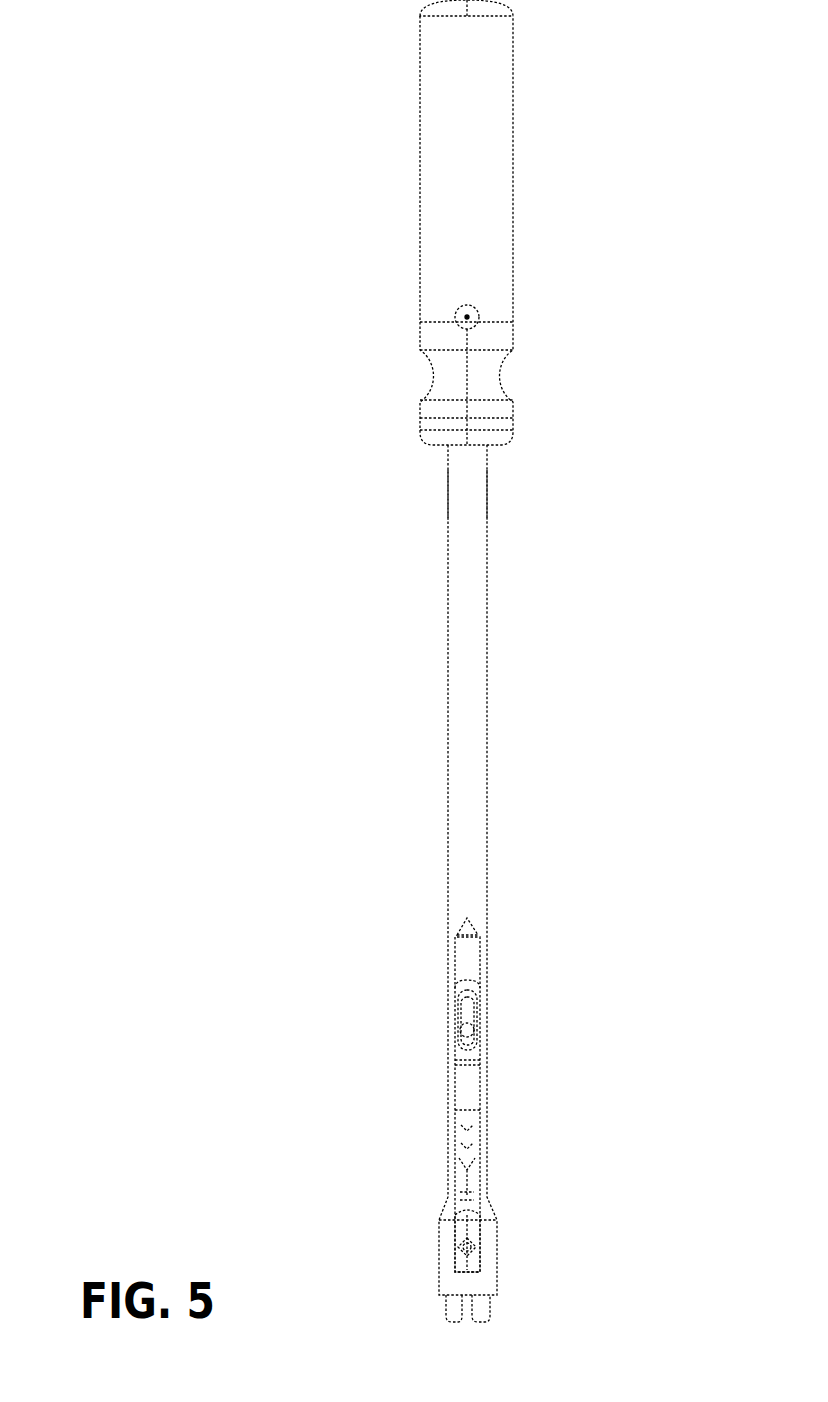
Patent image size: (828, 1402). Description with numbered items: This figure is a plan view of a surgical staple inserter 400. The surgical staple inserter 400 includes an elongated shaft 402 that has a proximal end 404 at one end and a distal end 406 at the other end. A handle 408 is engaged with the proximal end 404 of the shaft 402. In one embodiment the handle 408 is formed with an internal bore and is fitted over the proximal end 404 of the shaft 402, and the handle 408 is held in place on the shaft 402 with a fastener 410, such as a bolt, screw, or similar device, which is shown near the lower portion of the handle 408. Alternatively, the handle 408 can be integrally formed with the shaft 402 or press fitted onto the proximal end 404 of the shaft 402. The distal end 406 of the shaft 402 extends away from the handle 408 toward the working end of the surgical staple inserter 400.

The surgical staple inserter 400 is at (241, 167).
The shaft 402 is at (470, 730).
The proximal end 404 is at (468, 488).
The distal end 406 is at (487, 1128).
The handle 408 is at (505, 183).
The fastener 410 is at (474, 311).